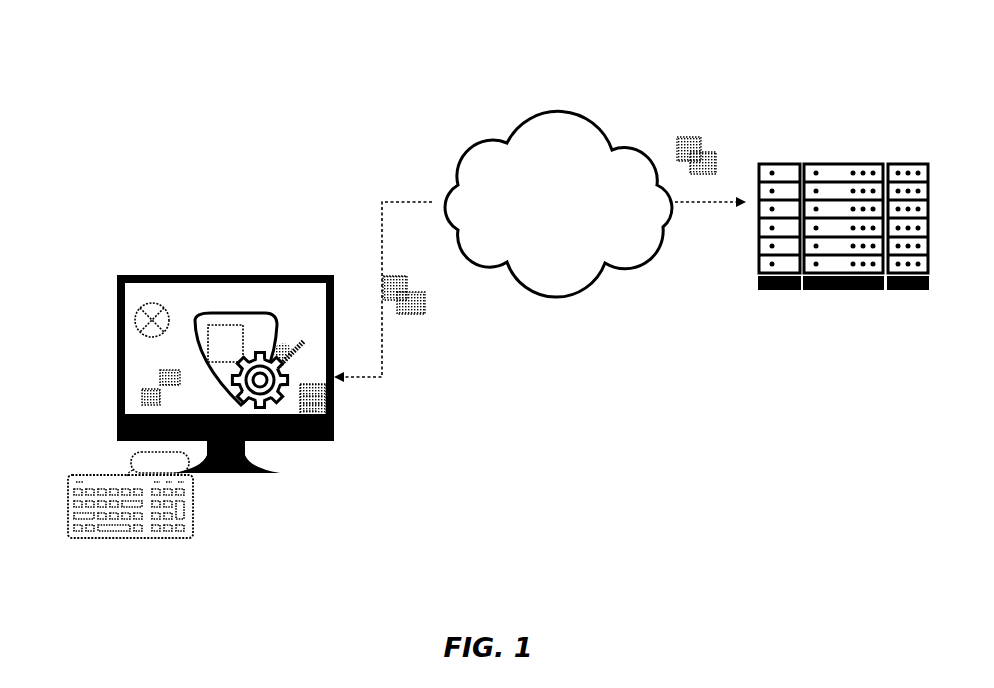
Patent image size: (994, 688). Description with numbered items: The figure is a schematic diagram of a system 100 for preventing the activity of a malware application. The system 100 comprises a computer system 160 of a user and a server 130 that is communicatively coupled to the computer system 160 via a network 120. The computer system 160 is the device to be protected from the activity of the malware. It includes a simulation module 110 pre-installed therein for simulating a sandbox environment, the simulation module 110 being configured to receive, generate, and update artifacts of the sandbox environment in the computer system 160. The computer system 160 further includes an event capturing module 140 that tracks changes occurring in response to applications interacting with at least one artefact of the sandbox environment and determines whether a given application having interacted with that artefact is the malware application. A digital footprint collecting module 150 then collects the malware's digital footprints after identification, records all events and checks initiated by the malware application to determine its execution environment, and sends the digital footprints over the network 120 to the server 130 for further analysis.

The system 100 is at (74, 76).
The simulation module 110 is at (241, 351).
The network 120 is at (595, 204).
The server 130 is at (843, 239).
The event capturing module 140 is at (128, 271).
The digital footprint collecting module 150 is at (167, 271).
The computer system 160 is at (318, 213).